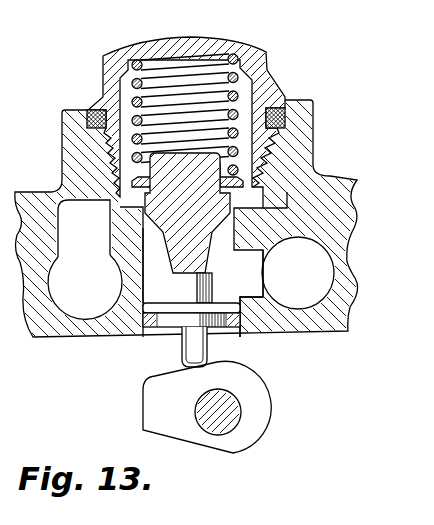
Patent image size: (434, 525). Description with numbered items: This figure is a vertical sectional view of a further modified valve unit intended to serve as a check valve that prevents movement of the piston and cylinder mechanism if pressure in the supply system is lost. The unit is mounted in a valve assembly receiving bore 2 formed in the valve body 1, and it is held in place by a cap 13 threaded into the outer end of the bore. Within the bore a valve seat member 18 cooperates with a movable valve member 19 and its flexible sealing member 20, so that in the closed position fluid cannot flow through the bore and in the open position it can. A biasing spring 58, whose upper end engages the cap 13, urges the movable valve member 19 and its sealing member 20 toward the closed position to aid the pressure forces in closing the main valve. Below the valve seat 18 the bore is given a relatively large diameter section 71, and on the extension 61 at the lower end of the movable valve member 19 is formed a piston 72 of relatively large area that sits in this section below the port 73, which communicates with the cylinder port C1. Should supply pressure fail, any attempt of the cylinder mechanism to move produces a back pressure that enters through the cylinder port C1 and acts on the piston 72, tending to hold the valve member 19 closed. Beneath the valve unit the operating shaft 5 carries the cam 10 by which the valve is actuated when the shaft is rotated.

The valve body 1 is at (320, 116).
The valve assembly receiving bore 2 is at (280, 198).
The operating shaft 5 is at (218, 432).
The cam 10 is at (258, 392).
The cap 13 is at (112, 52).
The valve seat member 18 is at (110, 222).
The movable valve member 19 is at (170, 227).
The flexible sealing member 20 is at (248, 166).
The biasing spring 58 is at (237, 93).
The extension 61 is at (211, 287).
The large diameter section 71 is at (152, 276).
The piston 72 is at (183, 318).
The port 73 is at (255, 294).
The cylinder port C1 is at (319, 269).